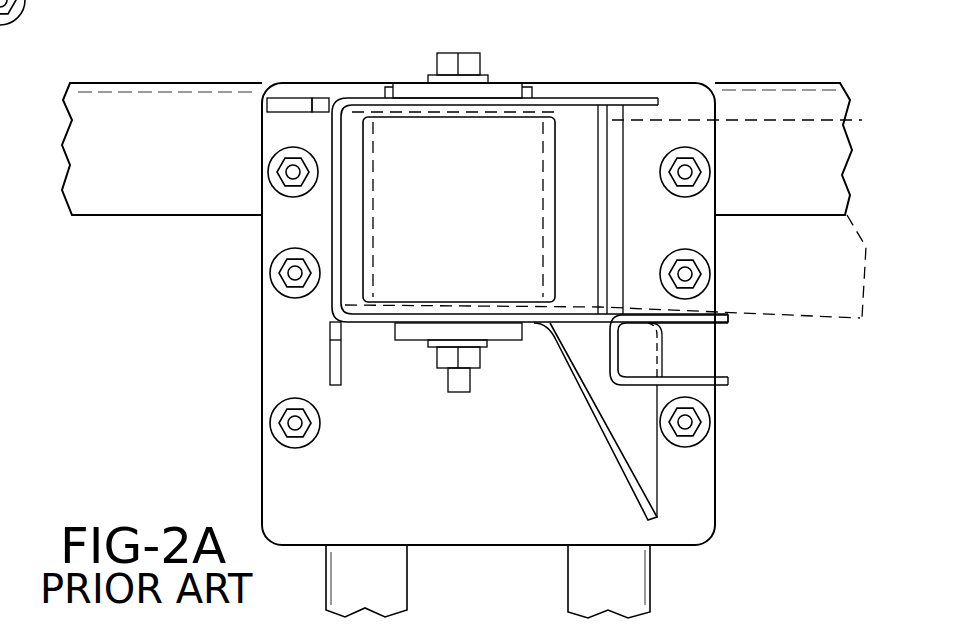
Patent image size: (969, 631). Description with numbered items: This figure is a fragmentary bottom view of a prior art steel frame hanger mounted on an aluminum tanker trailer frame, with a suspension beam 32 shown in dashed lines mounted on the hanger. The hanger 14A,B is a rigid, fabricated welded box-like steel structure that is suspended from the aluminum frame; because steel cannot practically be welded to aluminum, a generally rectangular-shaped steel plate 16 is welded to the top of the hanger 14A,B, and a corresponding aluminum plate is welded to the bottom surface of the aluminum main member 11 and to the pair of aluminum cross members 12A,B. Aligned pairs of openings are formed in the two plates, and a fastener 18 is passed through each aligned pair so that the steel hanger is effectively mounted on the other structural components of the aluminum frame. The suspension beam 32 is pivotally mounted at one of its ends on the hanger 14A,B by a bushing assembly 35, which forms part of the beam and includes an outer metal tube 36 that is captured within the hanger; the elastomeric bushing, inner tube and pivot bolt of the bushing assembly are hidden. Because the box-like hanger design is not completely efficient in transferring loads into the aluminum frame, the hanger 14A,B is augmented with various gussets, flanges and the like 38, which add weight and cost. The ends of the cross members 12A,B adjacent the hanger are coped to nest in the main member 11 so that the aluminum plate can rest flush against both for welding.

The main member 11 is at (100, 82).
The steel plate 16 is at (688, 110).
The suspension beam 32 is at (835, 320).
The hangers 14A,B is at (565, 100).
The gussets, flanges and the like 38 is at (290, 108).
The bushing assembly 35 is at (362, 157).
The outer metal tube 36 is at (368, 280).
The fastener 18 is at (288, 175).
The cross members 12A,B is at (568, 597).